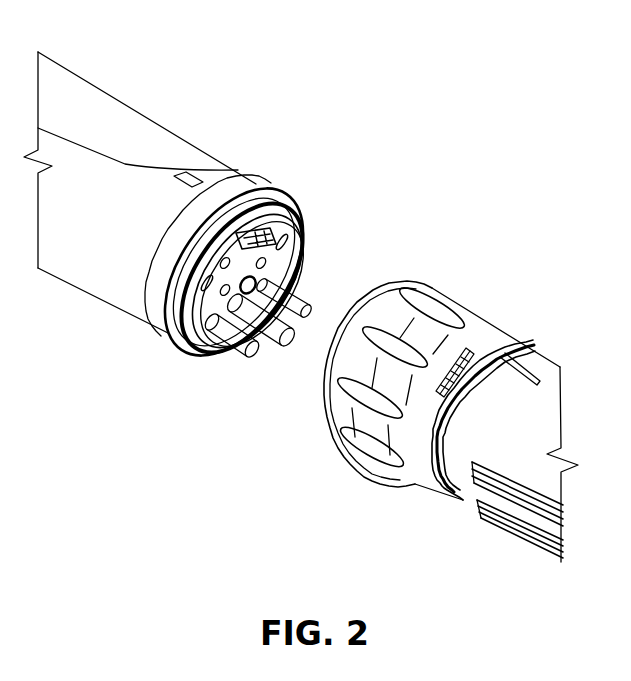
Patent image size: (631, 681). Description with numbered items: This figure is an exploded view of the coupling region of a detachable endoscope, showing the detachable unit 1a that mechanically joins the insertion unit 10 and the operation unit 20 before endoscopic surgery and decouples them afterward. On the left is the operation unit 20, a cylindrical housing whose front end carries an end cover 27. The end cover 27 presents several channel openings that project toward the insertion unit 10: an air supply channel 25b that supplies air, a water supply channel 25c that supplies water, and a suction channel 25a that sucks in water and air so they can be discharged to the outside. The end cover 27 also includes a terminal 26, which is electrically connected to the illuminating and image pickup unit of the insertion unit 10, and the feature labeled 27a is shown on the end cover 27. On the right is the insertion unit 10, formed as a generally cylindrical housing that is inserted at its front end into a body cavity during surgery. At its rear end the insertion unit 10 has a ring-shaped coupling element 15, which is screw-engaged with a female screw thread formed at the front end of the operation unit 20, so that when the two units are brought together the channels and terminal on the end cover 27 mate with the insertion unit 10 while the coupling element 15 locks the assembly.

The detachable unit 1a is at (420, 148).
The insertion unit 10 is at (542, 367).
The ring-shaped coupling element 15 is at (437, 282).
The operation unit 20 is at (120, 122).
The suction channel 25a is at (287, 350).
The air supply channel 25b is at (228, 357).
The water supply channel 25c is at (312, 298).
The terminal 26 is at (263, 188).
The end cover 27 is at (303, 278).
The keying slot 27a is at (310, 275).